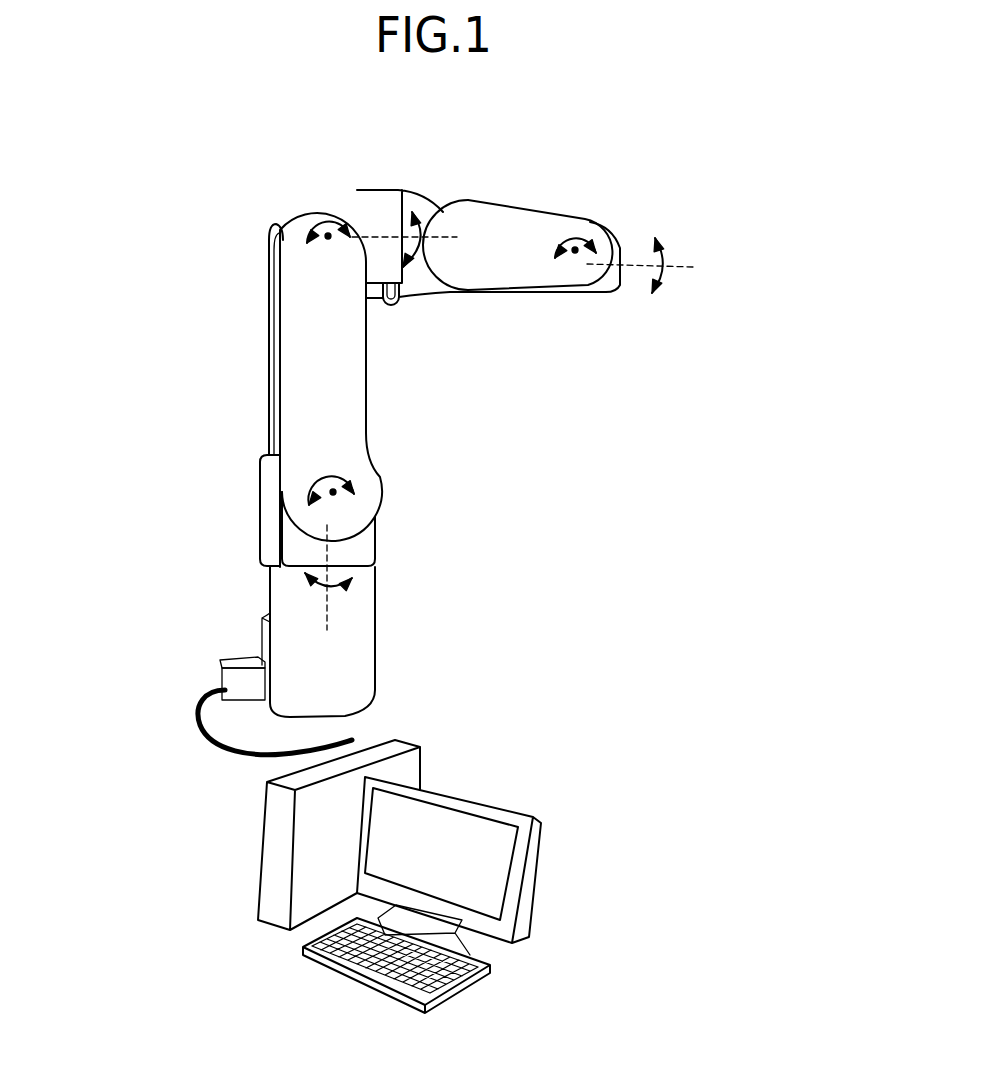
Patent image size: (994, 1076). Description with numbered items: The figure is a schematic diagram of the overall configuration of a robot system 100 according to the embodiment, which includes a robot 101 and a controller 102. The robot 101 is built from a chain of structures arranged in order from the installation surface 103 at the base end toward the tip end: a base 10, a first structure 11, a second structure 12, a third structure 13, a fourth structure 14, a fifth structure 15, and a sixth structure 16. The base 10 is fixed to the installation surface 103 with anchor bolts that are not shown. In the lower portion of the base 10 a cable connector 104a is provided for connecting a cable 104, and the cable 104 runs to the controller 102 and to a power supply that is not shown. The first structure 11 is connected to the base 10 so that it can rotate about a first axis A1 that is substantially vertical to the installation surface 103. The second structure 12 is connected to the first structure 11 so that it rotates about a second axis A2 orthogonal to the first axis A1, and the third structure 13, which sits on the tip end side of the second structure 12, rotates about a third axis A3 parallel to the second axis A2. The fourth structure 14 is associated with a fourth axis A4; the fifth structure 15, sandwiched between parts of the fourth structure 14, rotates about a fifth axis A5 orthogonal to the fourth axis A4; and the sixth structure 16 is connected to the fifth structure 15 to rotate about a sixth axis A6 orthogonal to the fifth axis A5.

The base 10 is at (277, 603).
The first structure 11 is at (285, 537).
The second structure 12 is at (268, 393).
The third structure 13 is at (383, 213).
The fourth structure 14 is at (424, 207).
The fifth structure 15 is at (520, 200).
The sixth structure 16 is at (612, 230).
The robot system 100 is at (672, 659).
The robot 101 is at (498, 554).
The controller 102 is at (548, 768).
The installation surface 103 is at (455, 721).
The cable 104 is at (197, 702).
The cable connector 104a is at (242, 658).
The first axis A1 is at (328, 603).
The second axis A2 is at (340, 485).
The third axis A3 is at (320, 232).
The fourth axis A4 is at (443, 237).
The fifth axis A5 is at (577, 254).
The sixth axis A6 is at (677, 268).